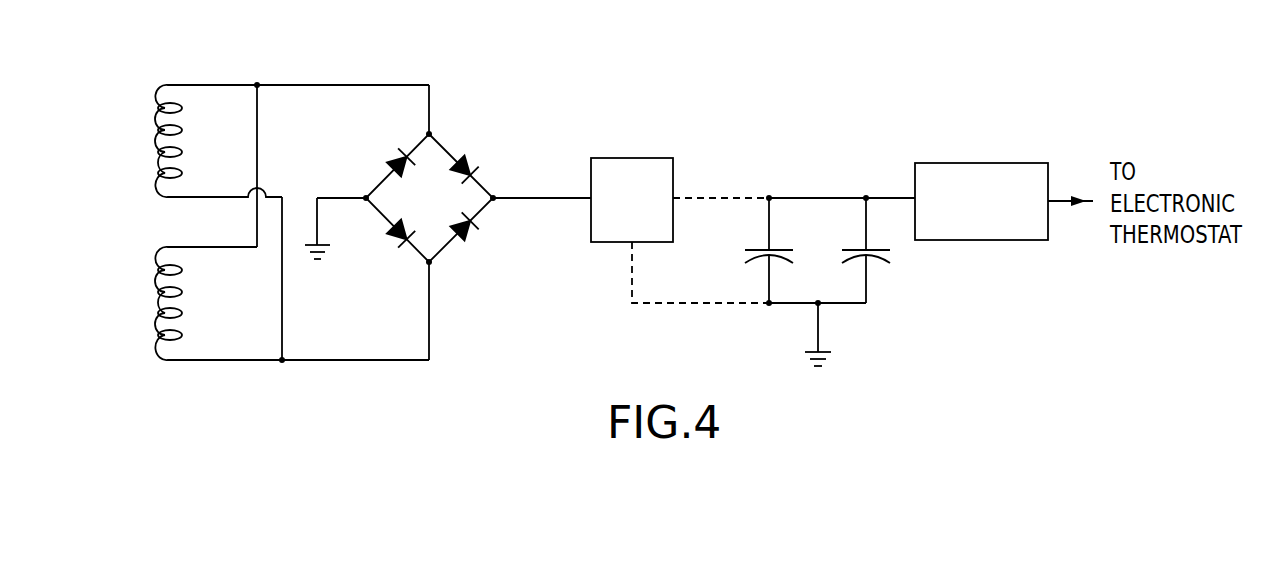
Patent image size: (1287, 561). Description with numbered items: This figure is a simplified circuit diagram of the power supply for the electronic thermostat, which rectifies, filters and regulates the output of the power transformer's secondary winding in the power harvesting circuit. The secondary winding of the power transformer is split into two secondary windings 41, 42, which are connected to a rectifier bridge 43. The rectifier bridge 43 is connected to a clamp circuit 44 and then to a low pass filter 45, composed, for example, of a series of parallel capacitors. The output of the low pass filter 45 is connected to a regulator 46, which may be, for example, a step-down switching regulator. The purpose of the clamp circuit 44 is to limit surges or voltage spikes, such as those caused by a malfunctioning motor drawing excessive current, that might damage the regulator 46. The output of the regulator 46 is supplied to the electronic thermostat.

The secondary winding 41 is at (155, 120).
The secondary winding 42 is at (155, 305).
The rectifier bridge 43 is at (470, 163).
The clamp circuit 44 is at (630, 158).
The low pass filter 45 is at (775, 176).
The regulator 46 is at (982, 163).